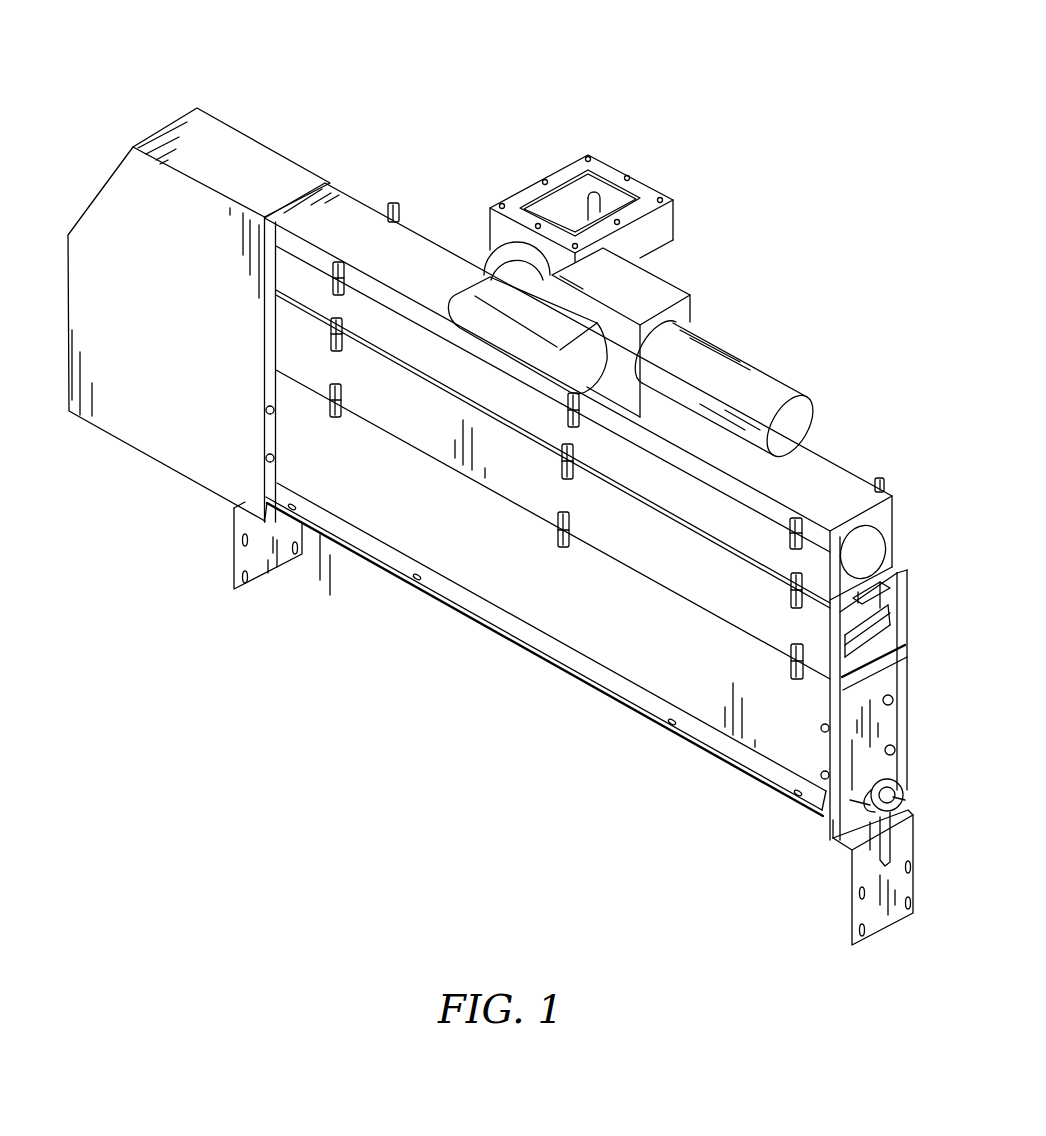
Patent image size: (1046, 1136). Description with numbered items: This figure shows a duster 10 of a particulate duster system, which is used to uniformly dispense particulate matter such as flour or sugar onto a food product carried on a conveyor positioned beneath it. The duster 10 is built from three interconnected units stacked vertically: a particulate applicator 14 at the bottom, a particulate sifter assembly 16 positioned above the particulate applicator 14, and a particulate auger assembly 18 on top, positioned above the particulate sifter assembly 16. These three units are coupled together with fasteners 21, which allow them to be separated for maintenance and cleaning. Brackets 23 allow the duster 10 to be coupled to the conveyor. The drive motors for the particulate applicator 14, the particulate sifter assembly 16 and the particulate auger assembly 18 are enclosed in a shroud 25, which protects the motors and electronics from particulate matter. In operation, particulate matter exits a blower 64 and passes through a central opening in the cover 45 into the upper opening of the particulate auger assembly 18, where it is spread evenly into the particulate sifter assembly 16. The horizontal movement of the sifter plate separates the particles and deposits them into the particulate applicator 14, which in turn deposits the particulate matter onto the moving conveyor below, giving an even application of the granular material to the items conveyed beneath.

The duster 10 is at (323, 76).
The particulate applicator 14 is at (697, 670).
The particulate sifter assembly 16 is at (645, 546).
The particulate auger assembly 18 is at (798, 487).
The fasteners 21 is at (558, 465).
The brackets 23 is at (267, 550).
The shroud 25 is at (160, 395).
The cover 45 is at (347, 226).
The blower 64 is at (640, 237).